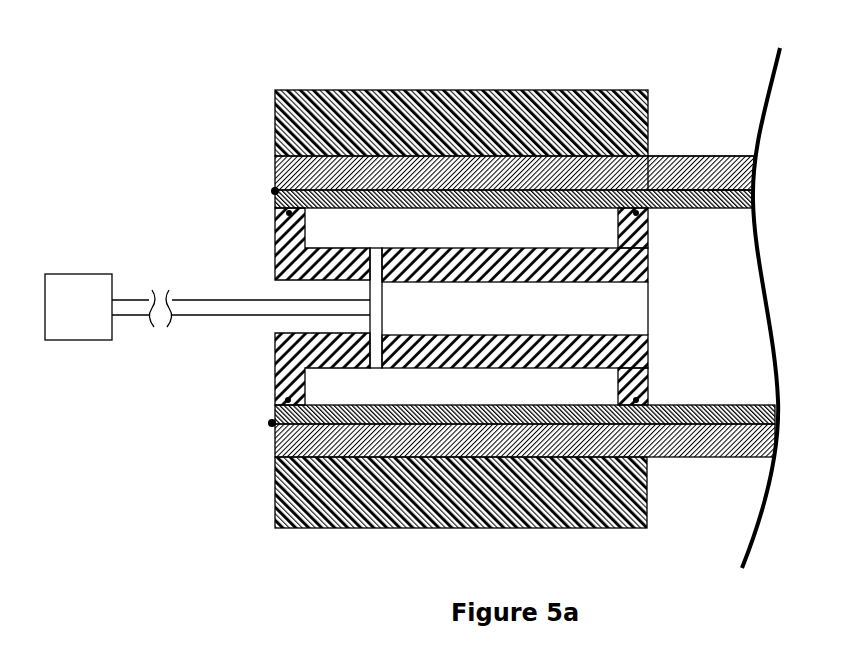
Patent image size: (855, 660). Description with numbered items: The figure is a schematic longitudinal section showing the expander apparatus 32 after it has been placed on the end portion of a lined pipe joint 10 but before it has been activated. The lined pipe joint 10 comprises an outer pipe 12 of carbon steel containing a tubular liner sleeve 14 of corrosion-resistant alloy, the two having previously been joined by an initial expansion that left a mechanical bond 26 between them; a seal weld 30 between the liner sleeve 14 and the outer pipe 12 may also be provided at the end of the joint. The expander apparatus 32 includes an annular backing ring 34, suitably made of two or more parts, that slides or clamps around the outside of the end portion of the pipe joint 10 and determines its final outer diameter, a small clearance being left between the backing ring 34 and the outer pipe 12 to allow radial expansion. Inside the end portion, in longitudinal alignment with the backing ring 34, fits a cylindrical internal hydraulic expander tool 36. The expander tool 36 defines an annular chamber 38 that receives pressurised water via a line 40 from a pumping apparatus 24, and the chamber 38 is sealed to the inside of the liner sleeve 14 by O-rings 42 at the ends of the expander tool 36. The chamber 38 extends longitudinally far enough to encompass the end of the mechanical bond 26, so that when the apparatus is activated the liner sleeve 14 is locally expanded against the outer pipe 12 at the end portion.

The lined pipe joint 10 is at (245, 155).
The outer pipe 12 is at (710, 172).
The liner sleeve 14 is at (680, 213).
The pumping apparatus 24 is at (72, 290).
The mechanical bond 26 is at (663, 172).
The seal weld 30 is at (455, 176).
The expander apparatus 32 is at (247, 232).
The backing ring 34 is at (487, 120).
The expander tool 36 is at (640, 349).
The annular chamber 38 is at (473, 230).
The line 40 is at (130, 315).
The O-rings 42 is at (275, 402).